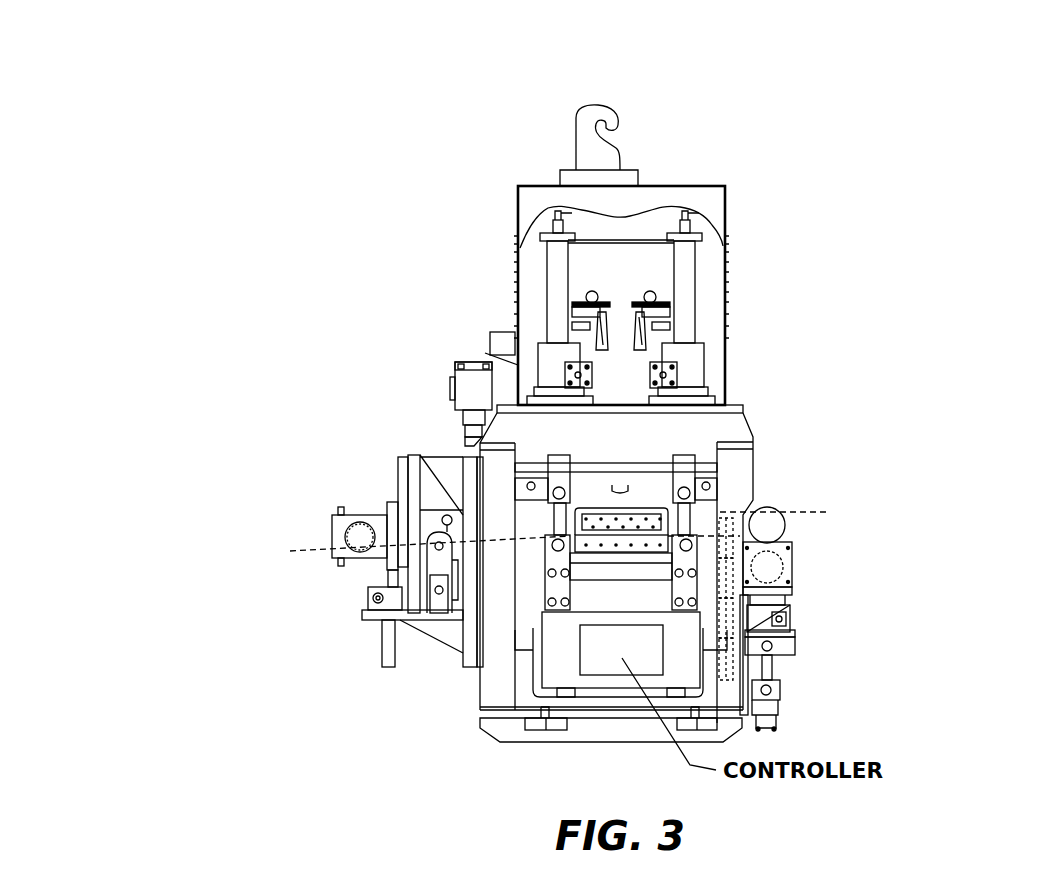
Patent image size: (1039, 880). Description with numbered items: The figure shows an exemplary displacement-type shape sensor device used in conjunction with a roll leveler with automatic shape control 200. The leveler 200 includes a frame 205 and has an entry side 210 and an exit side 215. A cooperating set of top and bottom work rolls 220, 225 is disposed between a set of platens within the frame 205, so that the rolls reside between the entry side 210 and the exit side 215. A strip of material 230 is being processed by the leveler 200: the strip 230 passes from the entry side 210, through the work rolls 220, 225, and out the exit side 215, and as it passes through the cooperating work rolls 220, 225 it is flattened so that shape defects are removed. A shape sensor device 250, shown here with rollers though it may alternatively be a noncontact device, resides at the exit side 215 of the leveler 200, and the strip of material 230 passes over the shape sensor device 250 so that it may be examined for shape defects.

The roll leveler with automatic shape control 200 is at (238, 130).
The frame 205 is at (740, 420).
The entry side 210 is at (328, 590).
The exit side 215 is at (893, 590).
The top work roll 220 is at (602, 528).
The bottom work roll 225 is at (640, 528).
The strip of material 230 is at (350, 560).
The shape sensor device 250 is at (823, 550).